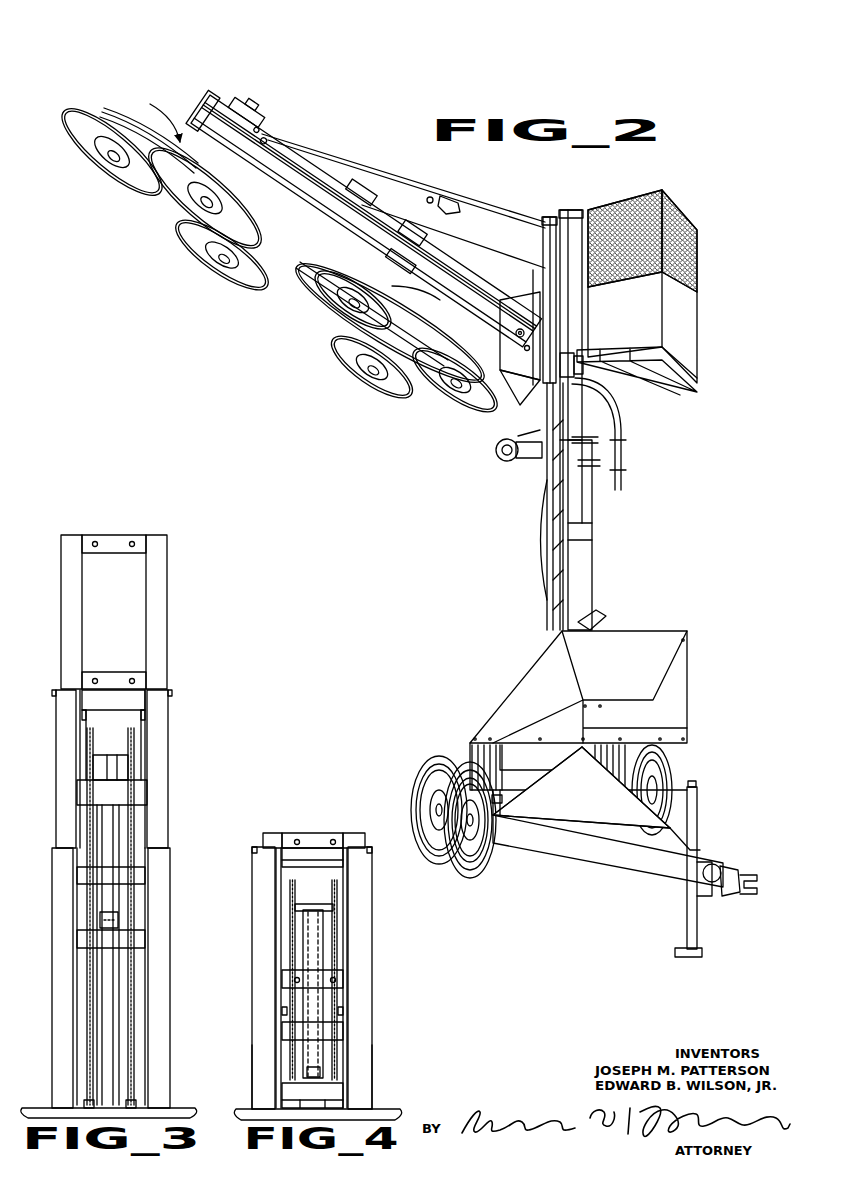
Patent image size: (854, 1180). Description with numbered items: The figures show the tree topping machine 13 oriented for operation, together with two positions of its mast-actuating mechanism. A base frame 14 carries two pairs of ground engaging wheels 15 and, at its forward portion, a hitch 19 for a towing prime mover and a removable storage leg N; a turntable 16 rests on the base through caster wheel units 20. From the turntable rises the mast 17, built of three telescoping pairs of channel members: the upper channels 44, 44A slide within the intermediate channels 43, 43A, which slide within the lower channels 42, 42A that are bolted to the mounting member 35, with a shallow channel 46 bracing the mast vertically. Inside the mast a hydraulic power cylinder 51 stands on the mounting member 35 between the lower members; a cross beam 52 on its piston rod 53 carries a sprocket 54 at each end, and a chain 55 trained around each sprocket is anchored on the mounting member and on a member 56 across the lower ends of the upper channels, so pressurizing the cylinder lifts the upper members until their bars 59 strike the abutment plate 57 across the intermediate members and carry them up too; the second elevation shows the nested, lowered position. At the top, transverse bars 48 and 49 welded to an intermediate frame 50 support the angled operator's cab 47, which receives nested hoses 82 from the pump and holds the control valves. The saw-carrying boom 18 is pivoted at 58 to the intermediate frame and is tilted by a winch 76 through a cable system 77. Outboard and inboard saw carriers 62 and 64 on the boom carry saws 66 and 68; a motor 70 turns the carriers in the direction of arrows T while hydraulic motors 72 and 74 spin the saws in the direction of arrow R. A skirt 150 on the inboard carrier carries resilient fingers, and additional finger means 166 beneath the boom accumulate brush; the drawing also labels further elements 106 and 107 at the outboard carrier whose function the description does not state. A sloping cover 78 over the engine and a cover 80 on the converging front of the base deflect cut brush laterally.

In FIG. 2, the tree topping machine 13 is at (358, 108).
In FIG. 2, the base frame 14 is at (600, 866).
In FIG. 2, the ground engaging wheels 15 is at (668, 784).
In FIG. 2, the turntable 16 is at (470, 745).
In FIG. 2, the mast 17 is at (592, 552).
In FIG. 3, the mast 17 is at (176, 690).
In FIG. 4, the mast 17 is at (374, 970).
In FIG. 2, the saw-carrying boom 18 is at (222, 98).
In FIG. 2, the hitch 19 is at (742, 905).
In FIG. 2, the caster wheel units 20 is at (504, 800).
In FIG. 3, the mounting member 35 is at (40, 1110).
In FIG. 4, the mounting member 35 is at (385, 1110).
In FIG. 2, the lower channel member 42 is at (546, 602).
In FIG. 3, the lower channel member 42 is at (62, 1020).
In FIG. 4, the lower channel member 42 is at (262, 1045).
In FIG. 2, the lower channel member 42A is at (585, 594).
In FIG. 3, the lower channel member 42A is at (158, 960).
In FIG. 4, the lower channel member 42A is at (365, 1050).
In FIG. 2, the intermediate channel member 43 is at (547, 404).
In FIG. 3, the intermediate channel member 43 is at (70, 770).
In FIG. 4, the intermediate channel member 43 is at (268, 858).
In FIG. 2, the intermediate channel member 43A is at (575, 418).
In FIG. 3, the intermediate channel member 43A is at (160, 770).
In FIG. 4, the intermediate channel member 43A is at (358, 834).
In FIG. 2, the upper channel member 44 is at (543, 258).
In FIG. 3, the upper channel member 44 is at (70, 582).
In FIG. 4, the upper channel member 44 is at (268, 834).
In FIG. 2, the upper channel member 44A is at (578, 242).
In FIG. 3, the upper channel member 44A is at (158, 584).
In FIG. 4, the upper channel member 44A is at (355, 834).
In FIG. 2, the shallow channel 46 is at (604, 616).
In FIG. 2, the operator's cab 47 is at (690, 322).
In FIG. 2, the transverse bar 48 is at (571, 210).
In FIG. 2, the transverse bar 49 is at (582, 360).
In FIG. 2, the intermediate frame 50 is at (550, 216).
In FIG. 3, the hydraulic power cylinder 51 is at (108, 974).
In FIG. 4, the hydraulic power cylinder 51 is at (320, 950).
In FIG. 3, the cross beam 52 is at (108, 754).
In FIG. 4, the cross beam 52 is at (312, 903).
In FIG. 3, the piston rod 53 is at (107, 855).
In FIG. 4, the piston rod 53 is at (320, 926).
In FIG. 3, the sprocket 54 is at (87, 746).
In FIG. 4, the sprocket 54 is at (290, 890).
In FIG. 3, the chain 55 is at (87, 828).
In FIG. 4, the chain 55 is at (290, 922).
In FIG. 3, the cross member 56 is at (98, 794).
In FIG. 4, the cross member 56 is at (300, 1086).
In FIG. 3, the abutment plate 57 is at (110, 700).
In FIG. 4, the abutment plate 57 is at (330, 860).
In FIG. 2, the pivot 58 is at (520, 328).
In FIG. 3, the bars 59 is at (82, 716).
In FIG. 4, the bars 59 is at (282, 1009).
In FIG. 2, the outboard saw carrier 62 is at (135, 108).
In FIG. 2, the inboard saw carrier 64 is at (418, 392).
In FIG. 2, the saws 66 is at (200, 196).
In FIG. 2, the saws 68 is at (445, 392).
In FIG. 2, the motor 70 is at (355, 176).
In FIG. 2, the hydraulic motor 72 is at (252, 104).
In FIG. 2, the hydraulic motor 74 is at (445, 246).
In FIG. 2, the winch 76 is at (500, 460).
In FIG. 2, the cable system 77 is at (462, 198).
In FIG. 2, the cover 78 is at (578, 687).
In FIG. 2, the cover 80 is at (581, 787).
In FIG. 2, the nested hoses 82 is at (624, 452).
In FIG. 2, the reel layer 106 is at (116, 116).
In FIG. 2, the reel layer 107 is at (118, 108).
In FIG. 2, the skirt 150 is at (330, 328).
In FIG. 2, the resiliently supported finger means 166 is at (312, 274).
In FIG. 2, the arrow R is at (265, 246).
In FIG. 2, the arrow T is at (295, 186).
In FIG. 2, the storage leg N is at (687, 916).